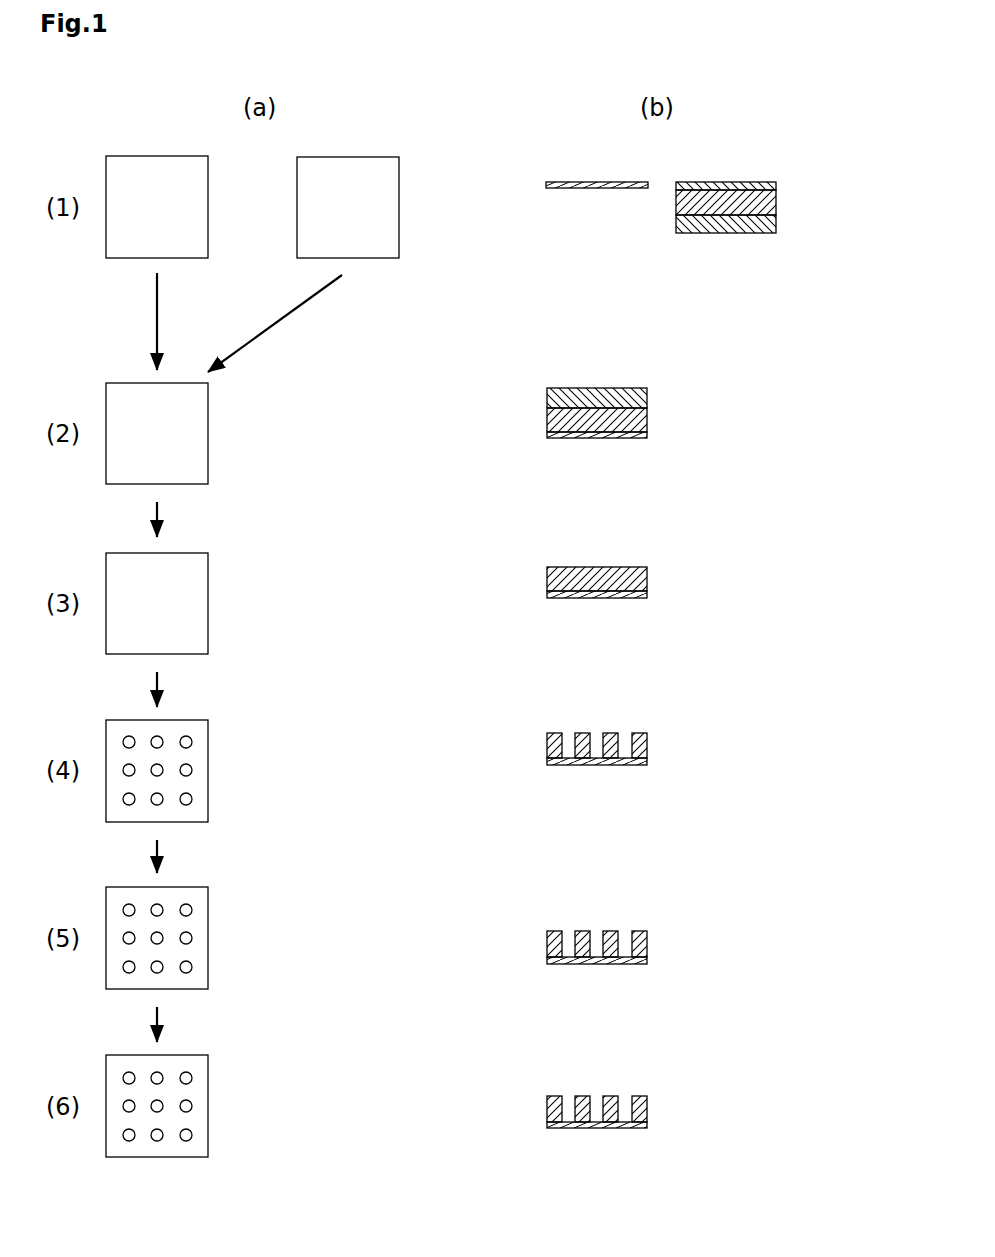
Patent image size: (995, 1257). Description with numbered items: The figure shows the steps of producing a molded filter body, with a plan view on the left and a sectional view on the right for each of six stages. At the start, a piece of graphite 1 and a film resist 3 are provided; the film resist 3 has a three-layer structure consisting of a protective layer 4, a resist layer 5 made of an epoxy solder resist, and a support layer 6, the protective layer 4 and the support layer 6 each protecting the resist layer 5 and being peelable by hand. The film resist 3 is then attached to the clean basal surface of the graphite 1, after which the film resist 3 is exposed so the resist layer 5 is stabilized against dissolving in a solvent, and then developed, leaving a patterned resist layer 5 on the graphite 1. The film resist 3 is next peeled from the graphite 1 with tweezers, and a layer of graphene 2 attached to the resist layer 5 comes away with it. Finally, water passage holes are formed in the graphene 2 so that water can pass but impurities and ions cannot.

The graphite 1 is at (208, 206).
The graphene 2 is at (208, 936).
The film resist 3 is at (399, 206).
The protective layer 4 is at (776, 186).
The resist layer 5 is at (770, 203).
The support layer 6 is at (776, 226).